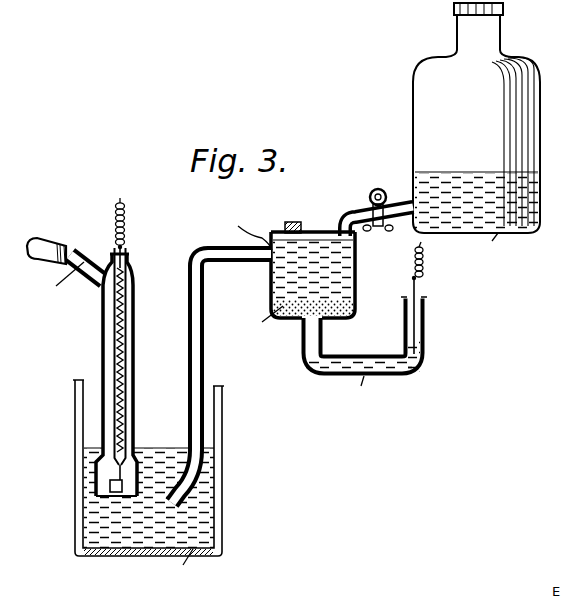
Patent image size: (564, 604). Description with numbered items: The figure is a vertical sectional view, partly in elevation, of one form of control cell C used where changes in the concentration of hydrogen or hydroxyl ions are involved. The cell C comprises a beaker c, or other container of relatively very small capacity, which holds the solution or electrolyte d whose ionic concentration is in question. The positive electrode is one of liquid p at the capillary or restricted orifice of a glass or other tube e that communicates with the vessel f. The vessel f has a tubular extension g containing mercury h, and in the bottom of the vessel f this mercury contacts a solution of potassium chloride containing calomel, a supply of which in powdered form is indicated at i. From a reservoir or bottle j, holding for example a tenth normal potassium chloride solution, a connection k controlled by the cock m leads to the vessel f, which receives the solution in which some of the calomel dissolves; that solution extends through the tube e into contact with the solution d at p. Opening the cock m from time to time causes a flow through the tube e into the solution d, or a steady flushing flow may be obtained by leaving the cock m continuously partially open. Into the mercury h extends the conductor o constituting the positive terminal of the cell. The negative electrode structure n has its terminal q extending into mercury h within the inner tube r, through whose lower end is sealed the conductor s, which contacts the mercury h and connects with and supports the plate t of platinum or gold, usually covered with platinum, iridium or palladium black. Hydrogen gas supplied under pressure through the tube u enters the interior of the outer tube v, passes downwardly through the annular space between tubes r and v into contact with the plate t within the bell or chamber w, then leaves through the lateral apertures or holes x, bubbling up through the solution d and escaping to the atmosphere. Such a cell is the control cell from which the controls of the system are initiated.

The reservoir or bottle j is at (413, 118).
The connection k is at (353, 214).
The cock m is at (378, 190).
The vessel f is at (365, 272).
The calomel supply i is at (357, 302).
The tubular extension g is at (310, 364).
The mercury h is at (128, 327).
The conductor o is at (419, 283).
The tube e is at (205, 345).
The cell C is at (75, 405).
The beaker c is at (222, 412).
The solution or electrolyte d is at (157, 451).
The liquid positive electrode p is at (172, 504).
The outer tube v is at (103, 335).
The tube u is at (42, 243).
The terminal q is at (126, 251).
The inner tube r is at (126, 352).
The conductor s is at (117, 470).
The bell or chamber w is at (98, 474).
The lateral apertures or holes x is at (108, 486).
The negative electrode structure n is at (112, 487).
The plate t is at (117, 493).